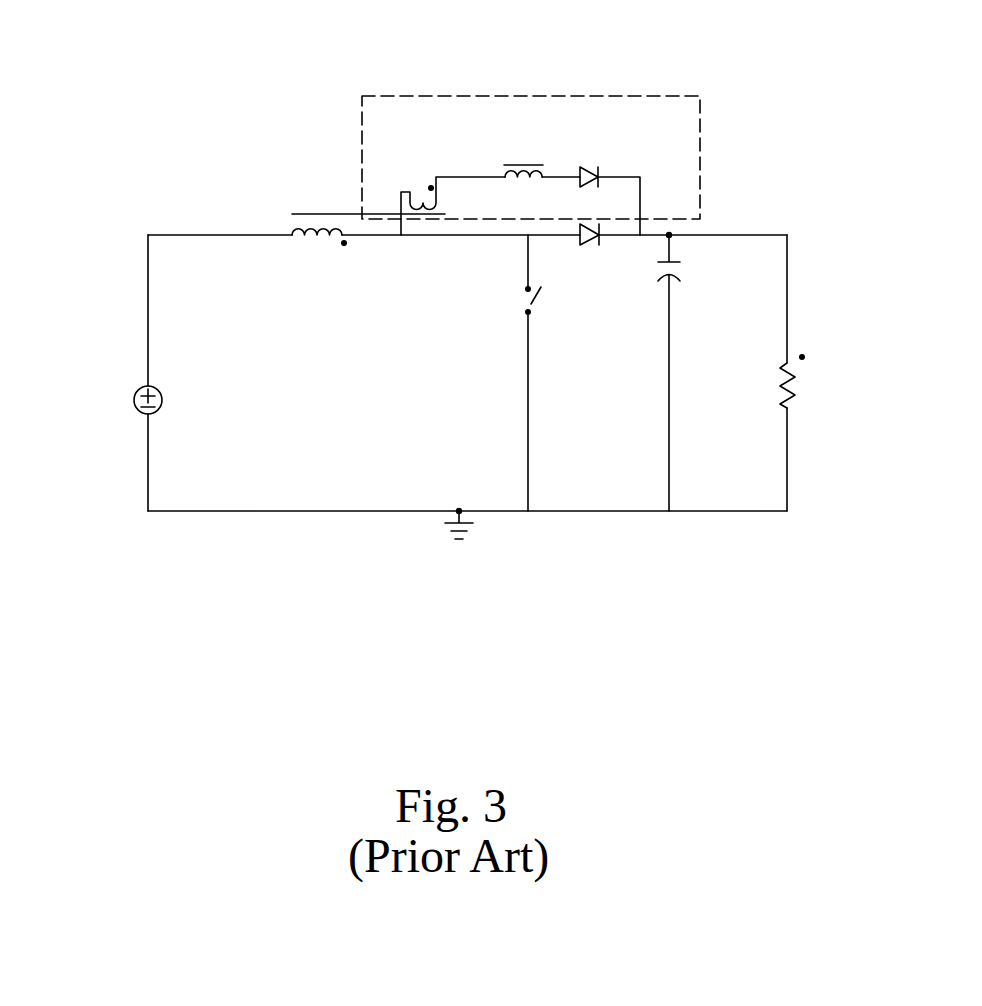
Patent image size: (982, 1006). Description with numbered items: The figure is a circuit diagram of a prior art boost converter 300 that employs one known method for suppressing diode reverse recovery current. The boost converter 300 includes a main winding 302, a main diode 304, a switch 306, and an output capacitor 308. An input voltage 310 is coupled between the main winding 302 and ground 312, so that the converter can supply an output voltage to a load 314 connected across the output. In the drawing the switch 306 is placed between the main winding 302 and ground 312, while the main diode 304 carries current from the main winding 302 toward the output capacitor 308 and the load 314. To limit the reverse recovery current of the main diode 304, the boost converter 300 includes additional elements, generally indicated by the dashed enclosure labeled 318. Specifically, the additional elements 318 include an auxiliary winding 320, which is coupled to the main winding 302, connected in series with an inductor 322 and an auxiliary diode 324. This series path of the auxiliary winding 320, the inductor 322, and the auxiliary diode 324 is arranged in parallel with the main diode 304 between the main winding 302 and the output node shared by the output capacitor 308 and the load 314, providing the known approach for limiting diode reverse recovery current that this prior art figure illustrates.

The boost converter 300 is at (162, 140).
The main winding 302 is at (292, 232).
The main diode 304 is at (590, 246).
The switch 306 is at (540, 297).
The output capacitor 308 is at (682, 276).
The input voltage 310 is at (132, 400).
The ground 312 is at (457, 543).
The load 314 is at (793, 382).
The additional elements 318 is at (376, 96).
The auxiliary winding 320 is at (419, 190).
The inductor 322 is at (523, 165).
The auxiliary diode 324 is at (586, 168).